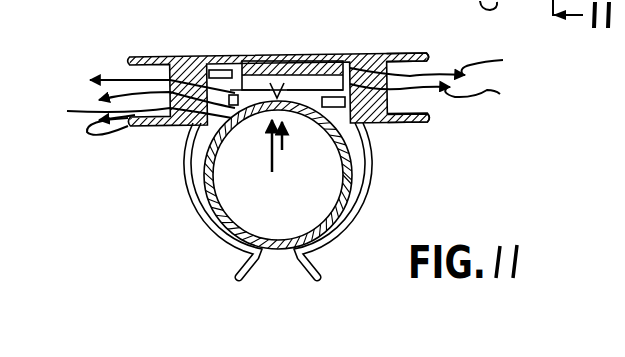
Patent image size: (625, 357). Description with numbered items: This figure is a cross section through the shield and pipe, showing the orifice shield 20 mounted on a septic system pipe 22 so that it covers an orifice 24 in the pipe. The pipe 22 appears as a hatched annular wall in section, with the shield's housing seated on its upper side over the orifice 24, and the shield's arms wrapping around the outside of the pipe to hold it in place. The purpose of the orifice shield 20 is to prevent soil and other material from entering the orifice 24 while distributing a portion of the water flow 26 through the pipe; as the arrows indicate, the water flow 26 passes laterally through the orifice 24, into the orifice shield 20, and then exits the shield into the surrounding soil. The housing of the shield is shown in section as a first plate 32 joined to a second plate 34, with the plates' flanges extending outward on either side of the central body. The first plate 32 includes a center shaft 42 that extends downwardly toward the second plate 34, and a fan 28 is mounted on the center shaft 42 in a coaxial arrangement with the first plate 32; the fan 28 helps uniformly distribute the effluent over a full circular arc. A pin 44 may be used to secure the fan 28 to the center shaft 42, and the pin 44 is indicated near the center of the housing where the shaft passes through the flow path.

The orifice shield 20 is at (357, 124).
The septic system pipe 22 is at (283, 250).
The orifice 24 is at (290, 124).
The water flow 26 is at (113, 79).
The fan 28 is at (534, 345).
The first plate 32 is at (423, 117).
The second plate 34 is at (425, 58).
The center shaft 42 is at (278, 98).
The pin 44 is at (318, 57).